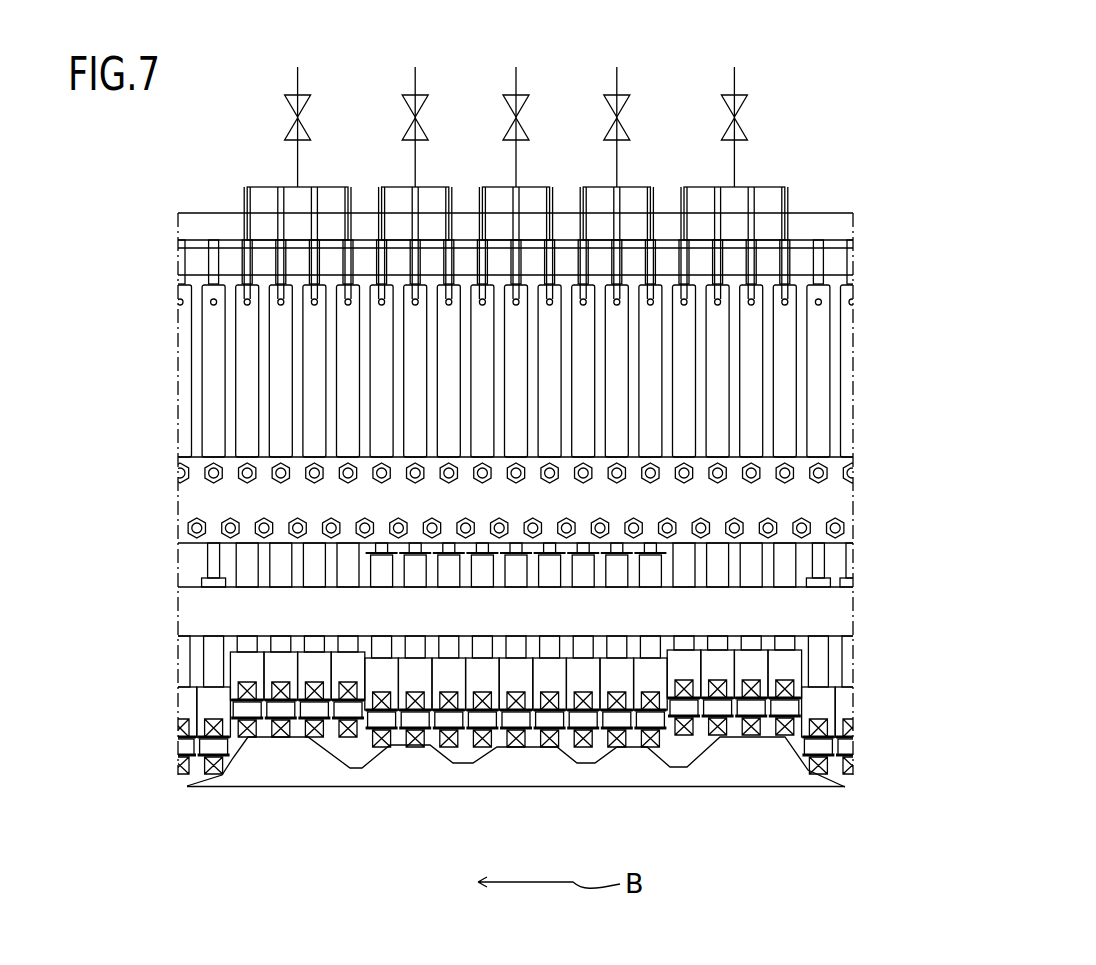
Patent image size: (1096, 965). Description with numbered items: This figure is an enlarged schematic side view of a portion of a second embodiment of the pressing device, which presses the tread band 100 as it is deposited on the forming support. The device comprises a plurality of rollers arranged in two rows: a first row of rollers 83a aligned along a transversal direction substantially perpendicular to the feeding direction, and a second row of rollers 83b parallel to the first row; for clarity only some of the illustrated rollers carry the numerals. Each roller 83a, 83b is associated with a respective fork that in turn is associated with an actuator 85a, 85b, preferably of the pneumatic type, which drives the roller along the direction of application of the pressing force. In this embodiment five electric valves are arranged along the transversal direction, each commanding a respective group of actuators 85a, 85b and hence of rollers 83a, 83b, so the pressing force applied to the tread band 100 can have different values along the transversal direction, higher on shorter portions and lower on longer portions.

The tread band 100 is at (762, 792).
The actuator 85a is at (315, 345).
The actuator 85b is at (350, 422).
The roller 83a is at (528, 752).
The roller 83b is at (565, 752).